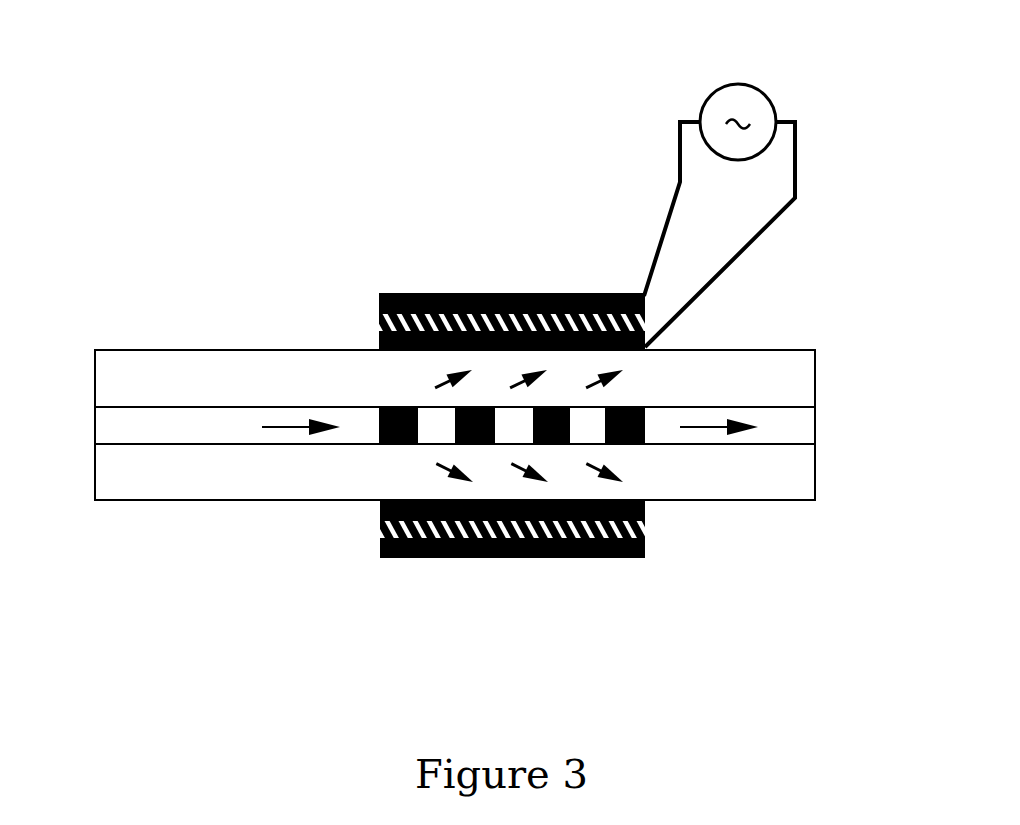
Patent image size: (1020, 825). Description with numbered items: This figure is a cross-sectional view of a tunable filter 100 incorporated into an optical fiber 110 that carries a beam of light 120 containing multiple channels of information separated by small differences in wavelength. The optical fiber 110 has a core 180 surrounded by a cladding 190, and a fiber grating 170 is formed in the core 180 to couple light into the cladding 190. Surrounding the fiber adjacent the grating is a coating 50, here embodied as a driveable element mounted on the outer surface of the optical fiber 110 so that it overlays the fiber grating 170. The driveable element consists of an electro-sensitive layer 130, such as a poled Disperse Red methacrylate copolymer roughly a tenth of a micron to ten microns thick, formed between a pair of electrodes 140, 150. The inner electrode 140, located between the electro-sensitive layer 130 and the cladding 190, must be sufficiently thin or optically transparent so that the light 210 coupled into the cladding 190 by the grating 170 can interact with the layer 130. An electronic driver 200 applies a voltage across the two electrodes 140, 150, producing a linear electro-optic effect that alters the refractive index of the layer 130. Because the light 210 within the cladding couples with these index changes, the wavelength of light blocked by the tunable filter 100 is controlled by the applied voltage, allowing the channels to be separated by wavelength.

The tunable filter 100 is at (441, 336).
The optical fiber 110 is at (797, 348).
The light 120 is at (285, 428).
The electro-sensitive layer 130 is at (642, 528).
The inner electrode 140 is at (378, 508).
The outer electrode 150 is at (380, 555).
The coating 50 is at (509, 282).
The fiber grating 170 is at (587, 427).
The core 180 is at (113, 427).
The cladding 190 is at (133, 482).
The electronic driver 200 is at (757, 103).
The light within the cladding 210 is at (437, 370).